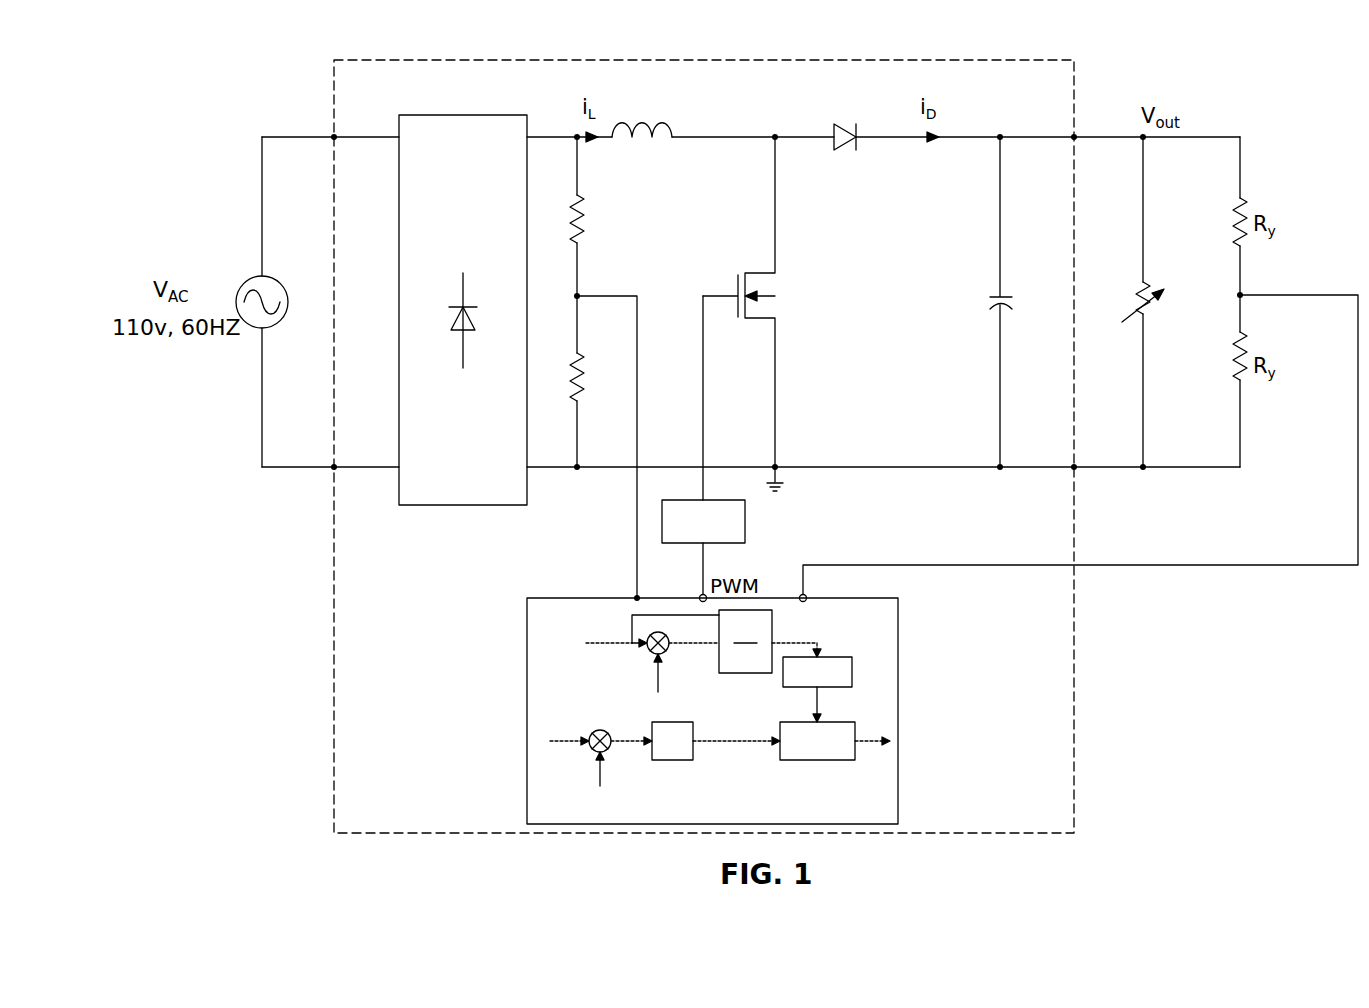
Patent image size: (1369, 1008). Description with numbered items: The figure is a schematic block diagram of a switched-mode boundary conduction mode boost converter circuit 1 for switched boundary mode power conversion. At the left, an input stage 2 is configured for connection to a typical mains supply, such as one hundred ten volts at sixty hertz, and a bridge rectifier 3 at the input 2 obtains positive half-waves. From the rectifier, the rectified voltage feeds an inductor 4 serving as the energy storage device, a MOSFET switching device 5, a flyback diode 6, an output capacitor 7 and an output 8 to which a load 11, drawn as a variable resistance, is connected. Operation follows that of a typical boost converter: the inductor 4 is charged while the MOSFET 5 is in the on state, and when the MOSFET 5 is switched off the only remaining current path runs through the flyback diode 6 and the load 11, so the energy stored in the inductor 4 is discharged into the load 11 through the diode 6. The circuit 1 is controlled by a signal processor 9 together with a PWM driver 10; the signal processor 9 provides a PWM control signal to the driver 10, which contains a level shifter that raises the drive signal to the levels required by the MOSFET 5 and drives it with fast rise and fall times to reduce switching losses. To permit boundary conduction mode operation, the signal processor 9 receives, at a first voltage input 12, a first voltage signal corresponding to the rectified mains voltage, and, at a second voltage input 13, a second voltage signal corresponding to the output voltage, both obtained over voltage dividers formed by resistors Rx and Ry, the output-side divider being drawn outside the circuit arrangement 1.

The boost converter circuit 1 is at (1074, 673).
The input stage 2 is at (437, 570).
The bridge rectifier 3 is at (442, 493).
The inductor 4 is at (666, 130).
The MOSFET switching device 5 is at (758, 271).
The flyback diode 6 is at (840, 122).
The output capacitor 7 is at (997, 295).
The output 8 is at (1068, 476).
The signal processor 9 is at (899, 721).
The PWM driver 10 is at (745, 521).
The load 11 is at (1143, 283).
The first voltage input 12 is at (636, 596).
The second voltage input 13 is at (806, 604).